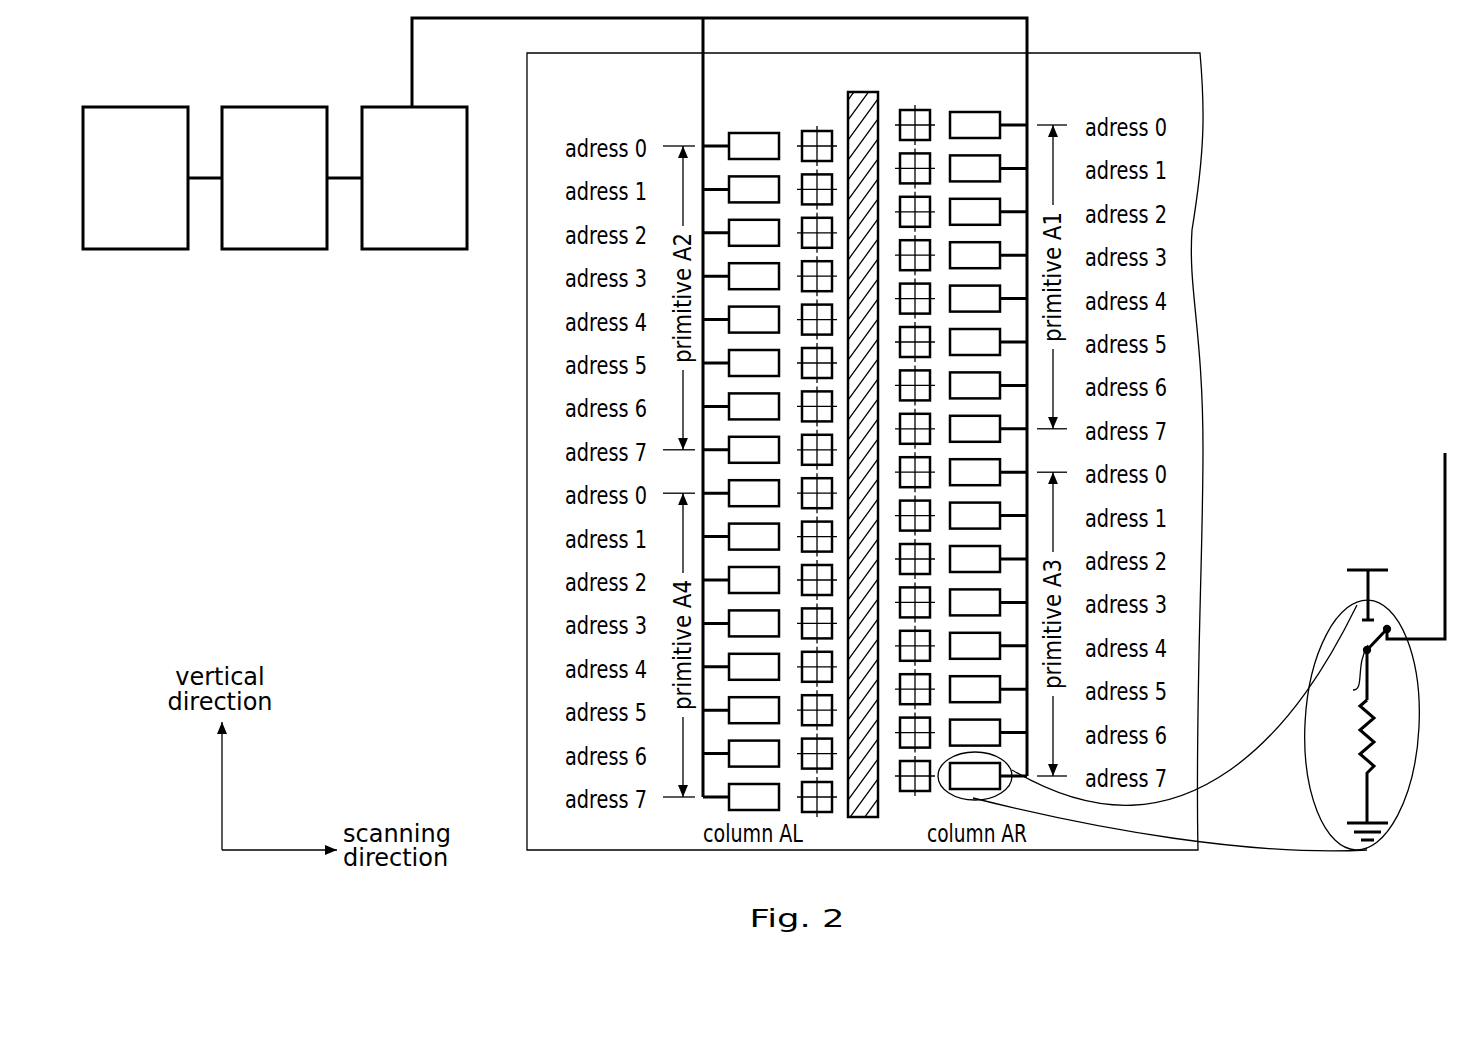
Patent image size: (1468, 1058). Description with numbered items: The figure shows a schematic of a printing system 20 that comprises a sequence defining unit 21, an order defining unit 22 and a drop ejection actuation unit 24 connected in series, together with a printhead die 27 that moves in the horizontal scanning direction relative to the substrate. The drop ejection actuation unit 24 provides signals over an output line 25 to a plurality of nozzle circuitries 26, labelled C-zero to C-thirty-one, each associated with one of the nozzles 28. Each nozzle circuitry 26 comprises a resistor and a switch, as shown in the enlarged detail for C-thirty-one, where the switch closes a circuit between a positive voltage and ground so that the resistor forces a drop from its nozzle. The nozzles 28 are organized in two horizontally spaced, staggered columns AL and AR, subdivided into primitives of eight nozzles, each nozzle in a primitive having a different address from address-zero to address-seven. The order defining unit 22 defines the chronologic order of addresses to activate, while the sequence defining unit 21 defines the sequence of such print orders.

The system 20 is at (178, 545).
The sequence defining unit 21 is at (138, 250).
The order defining unit 22 is at (278, 250).
The drop ejection actuation unit 24 is at (418, 250).
The output line 25 is at (412, 70).
The nozzle circuitries 26 is at (729, 125).
The printhead die 27 is at (1203, 152).
The nozzles 28 is at (797, 125).